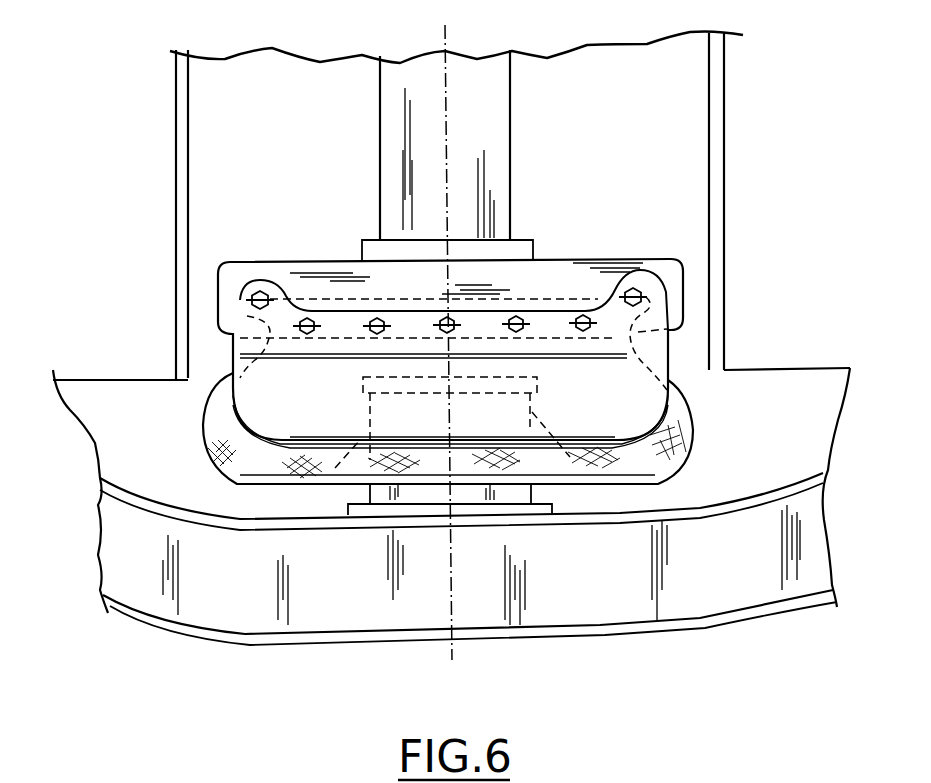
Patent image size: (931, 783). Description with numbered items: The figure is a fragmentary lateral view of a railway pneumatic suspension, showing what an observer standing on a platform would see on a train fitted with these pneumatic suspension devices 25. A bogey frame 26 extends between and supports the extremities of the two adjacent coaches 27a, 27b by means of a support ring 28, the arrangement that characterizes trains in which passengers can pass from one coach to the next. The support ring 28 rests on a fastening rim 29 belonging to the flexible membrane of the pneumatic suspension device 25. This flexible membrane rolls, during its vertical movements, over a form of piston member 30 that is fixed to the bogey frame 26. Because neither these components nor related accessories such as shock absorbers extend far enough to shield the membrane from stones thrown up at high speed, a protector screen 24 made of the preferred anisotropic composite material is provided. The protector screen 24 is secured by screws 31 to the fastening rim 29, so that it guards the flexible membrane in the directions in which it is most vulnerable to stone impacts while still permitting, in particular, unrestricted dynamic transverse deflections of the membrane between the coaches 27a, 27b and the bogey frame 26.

The protector screen 24 is at (508, 392).
The pneumatic suspension device 25 is at (643, 407).
The bogey frame 26 is at (353, 597).
The coach 27a is at (147, 230).
The coach 27b is at (738, 172).
The support ring 28 is at (497, 98).
The fastening rim 29 is at (290, 280).
The piston member 30 is at (473, 498).
The screws 31 is at (447, 333).